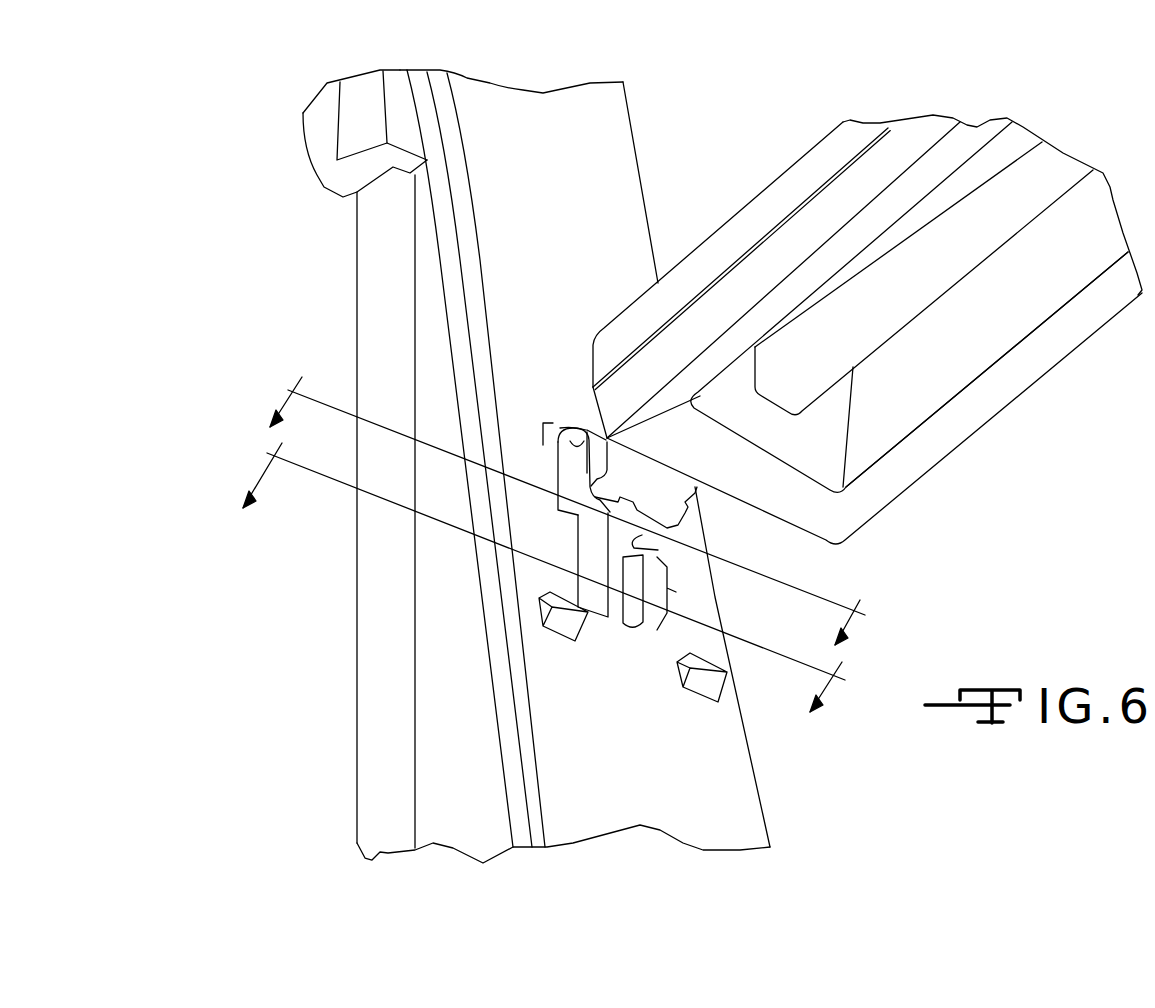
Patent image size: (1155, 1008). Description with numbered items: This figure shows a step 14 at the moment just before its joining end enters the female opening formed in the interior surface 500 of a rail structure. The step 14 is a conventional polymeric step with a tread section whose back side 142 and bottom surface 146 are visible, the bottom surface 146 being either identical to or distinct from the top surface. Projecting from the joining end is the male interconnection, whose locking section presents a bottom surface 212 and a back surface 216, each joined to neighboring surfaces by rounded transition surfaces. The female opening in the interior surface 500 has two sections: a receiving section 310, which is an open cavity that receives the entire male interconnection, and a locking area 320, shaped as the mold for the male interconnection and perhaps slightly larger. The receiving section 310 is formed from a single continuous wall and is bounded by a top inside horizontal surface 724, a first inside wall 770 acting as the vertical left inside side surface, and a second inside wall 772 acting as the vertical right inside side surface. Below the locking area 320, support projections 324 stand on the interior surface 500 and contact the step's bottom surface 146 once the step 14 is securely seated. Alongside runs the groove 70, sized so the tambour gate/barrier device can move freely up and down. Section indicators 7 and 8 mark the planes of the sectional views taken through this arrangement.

The step 14 is at (1088, 336).
The back side 142 is at (710, 282).
The bottom surface 146 is at (920, 456).
The back surface 216 is at (607, 440).
The bottom surface 212 is at (629, 495).
The top inside horizontal surface 724 is at (570, 428).
The receiving section 310 is at (547, 515).
The first inside wall 770 is at (561, 511).
The second inside wall 772 is at (648, 549).
The locking area 320 is at (676, 592).
The support projections 324 is at (567, 625).
The groove 70 is at (513, 770).
The interior surface 500 is at (682, 778).
The section line 7 is at (558, 515).
The section line 8 is at (536, 586).